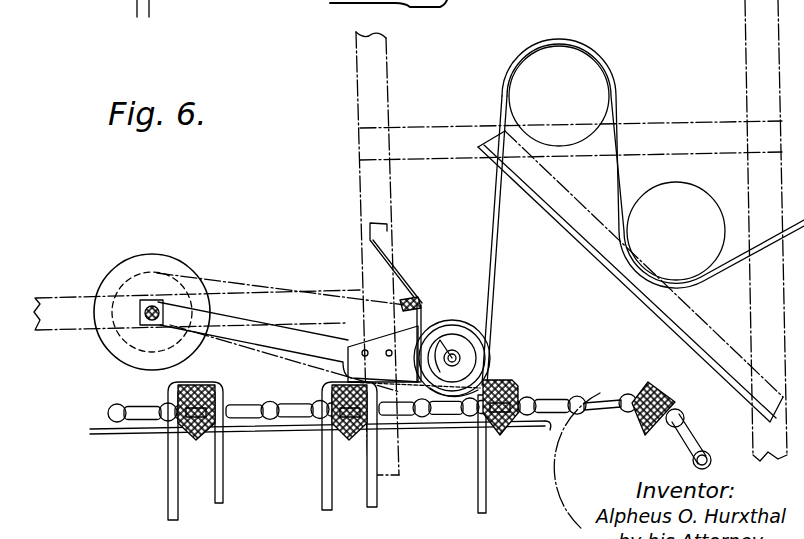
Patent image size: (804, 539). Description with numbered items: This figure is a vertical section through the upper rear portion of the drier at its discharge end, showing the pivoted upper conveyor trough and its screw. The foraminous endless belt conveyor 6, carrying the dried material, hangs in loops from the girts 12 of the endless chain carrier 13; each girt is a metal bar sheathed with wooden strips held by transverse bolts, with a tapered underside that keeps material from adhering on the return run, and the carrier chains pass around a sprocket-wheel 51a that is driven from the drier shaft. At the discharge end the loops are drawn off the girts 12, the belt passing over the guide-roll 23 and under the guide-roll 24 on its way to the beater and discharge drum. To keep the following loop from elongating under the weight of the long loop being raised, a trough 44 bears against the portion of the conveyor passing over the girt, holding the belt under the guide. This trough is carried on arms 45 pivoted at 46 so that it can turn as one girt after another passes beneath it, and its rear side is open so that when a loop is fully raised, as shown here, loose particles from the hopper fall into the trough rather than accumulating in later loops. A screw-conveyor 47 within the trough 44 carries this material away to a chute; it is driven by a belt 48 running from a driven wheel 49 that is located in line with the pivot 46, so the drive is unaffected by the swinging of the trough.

The endless belt conveyor 6 is at (614, 66).
The girt 12 is at (197, 441).
The endless chain carrier 13 is at (590, 399).
The guide-roll 23 is at (587, 68).
The guide-roll 24 is at (700, 180).
The trough 44 is at (470, 392).
The arm 45 is at (296, 318).
The pivot 46 is at (163, 300).
The screw-conveyor 47 is at (448, 337).
The belt 48 is at (252, 285).
The driven wheel 49 is at (175, 268).
The sprocket-wheel 51a is at (560, 480).